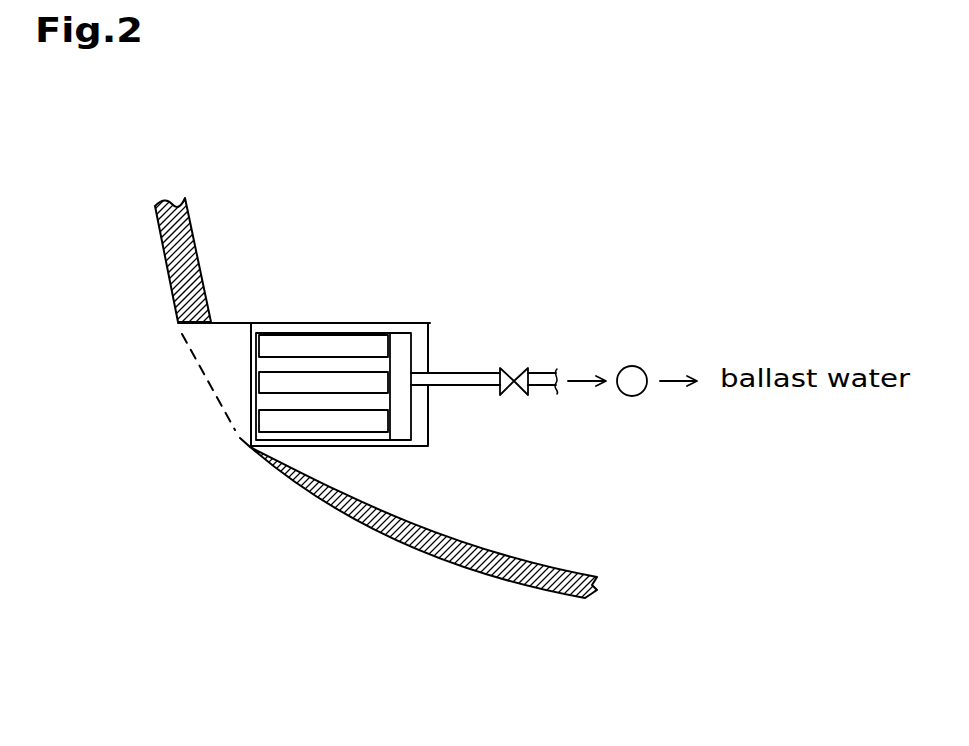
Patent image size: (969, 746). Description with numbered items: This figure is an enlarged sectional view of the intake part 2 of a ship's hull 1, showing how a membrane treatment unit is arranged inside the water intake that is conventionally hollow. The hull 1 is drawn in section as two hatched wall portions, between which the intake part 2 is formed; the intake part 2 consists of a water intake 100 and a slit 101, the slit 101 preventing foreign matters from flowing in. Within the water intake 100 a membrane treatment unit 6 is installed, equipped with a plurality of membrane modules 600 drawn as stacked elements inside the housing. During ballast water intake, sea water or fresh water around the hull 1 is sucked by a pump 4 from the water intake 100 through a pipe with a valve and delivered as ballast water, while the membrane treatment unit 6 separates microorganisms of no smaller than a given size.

The hull 1 is at (168, 270).
The slit 101 is at (183, 353).
The intake part 2 is at (175, 425).
The membrane treatment unit 6 is at (241, 436).
The water intake 100 is at (227, 340).
The membrane modules 600 is at (317, 420).
The pump 4 is at (630, 396).